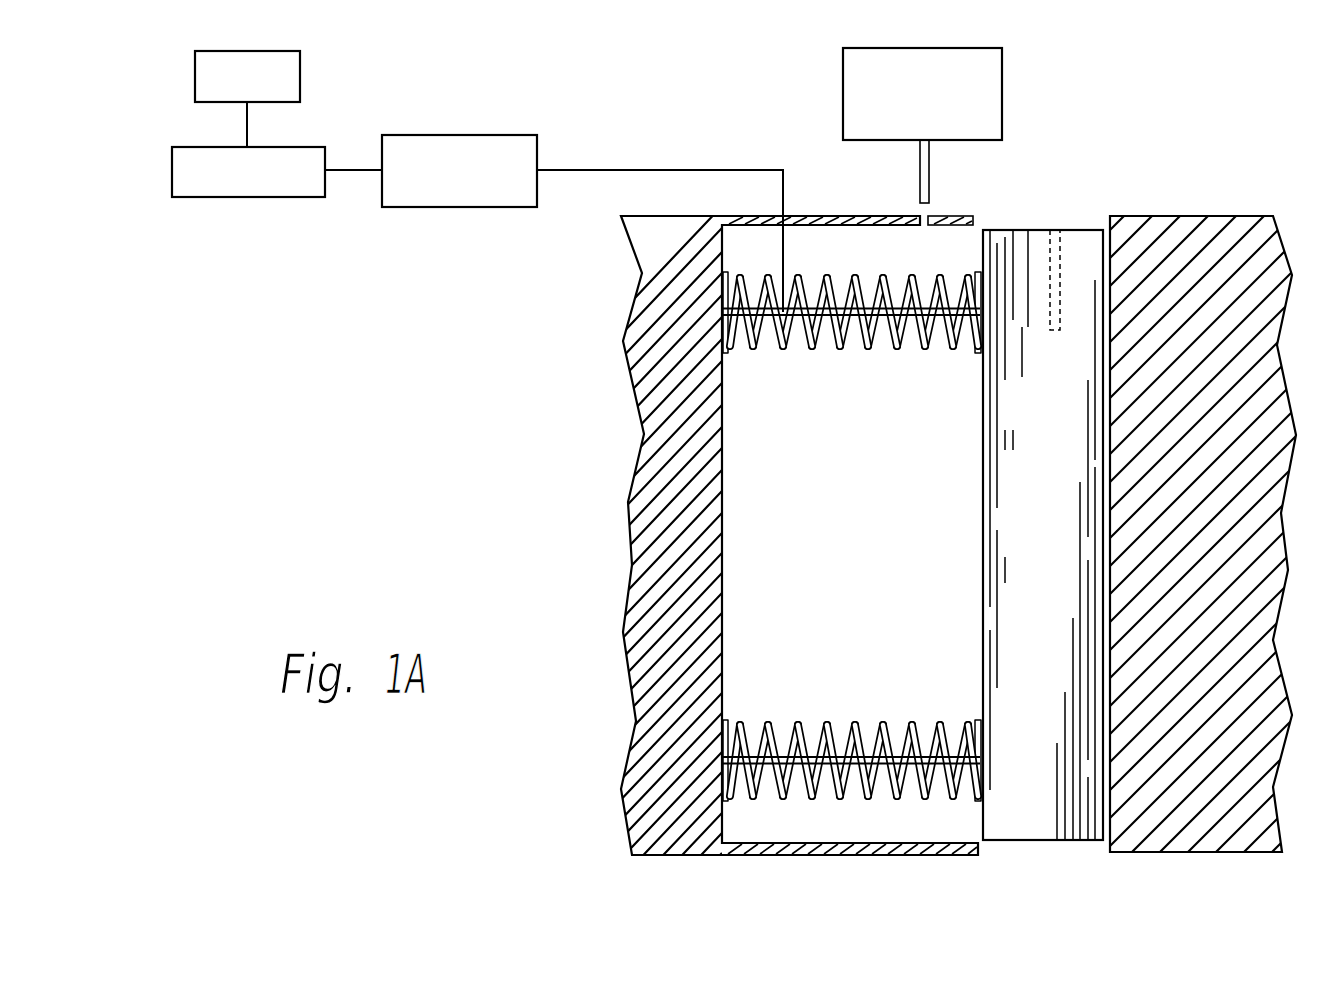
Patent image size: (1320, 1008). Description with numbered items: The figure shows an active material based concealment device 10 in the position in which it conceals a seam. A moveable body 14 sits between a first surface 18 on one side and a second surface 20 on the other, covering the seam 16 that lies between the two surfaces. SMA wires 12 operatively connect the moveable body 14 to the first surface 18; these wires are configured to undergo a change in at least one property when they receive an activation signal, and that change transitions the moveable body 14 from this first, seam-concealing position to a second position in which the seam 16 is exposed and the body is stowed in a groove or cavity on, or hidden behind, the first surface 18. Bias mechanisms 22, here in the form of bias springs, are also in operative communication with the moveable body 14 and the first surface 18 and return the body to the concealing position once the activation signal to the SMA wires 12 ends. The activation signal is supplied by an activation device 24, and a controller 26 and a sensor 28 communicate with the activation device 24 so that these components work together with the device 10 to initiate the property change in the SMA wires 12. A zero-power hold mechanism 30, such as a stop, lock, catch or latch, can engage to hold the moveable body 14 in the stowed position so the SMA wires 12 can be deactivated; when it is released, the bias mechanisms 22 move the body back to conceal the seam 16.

The active material based concealment device 10 is at (380, 409).
The SMA wires 12 is at (828, 350).
The moveable body 14 is at (1040, 230).
The seam 16 is at (1112, 857).
The first surface 18 is at (677, 467).
The second surface 20 is at (1205, 232).
The bias mechanisms 22 is at (877, 327).
The activation device 24 is at (472, 135).
The controller 26 is at (245, 197).
The sensor 28 is at (300, 79).
The zero-power hold mechanism 30 is at (843, 87).